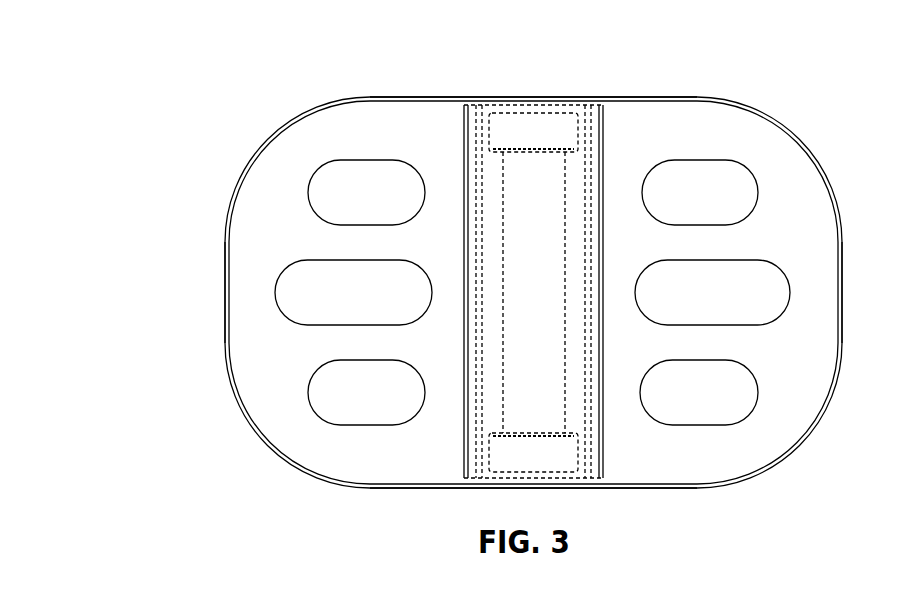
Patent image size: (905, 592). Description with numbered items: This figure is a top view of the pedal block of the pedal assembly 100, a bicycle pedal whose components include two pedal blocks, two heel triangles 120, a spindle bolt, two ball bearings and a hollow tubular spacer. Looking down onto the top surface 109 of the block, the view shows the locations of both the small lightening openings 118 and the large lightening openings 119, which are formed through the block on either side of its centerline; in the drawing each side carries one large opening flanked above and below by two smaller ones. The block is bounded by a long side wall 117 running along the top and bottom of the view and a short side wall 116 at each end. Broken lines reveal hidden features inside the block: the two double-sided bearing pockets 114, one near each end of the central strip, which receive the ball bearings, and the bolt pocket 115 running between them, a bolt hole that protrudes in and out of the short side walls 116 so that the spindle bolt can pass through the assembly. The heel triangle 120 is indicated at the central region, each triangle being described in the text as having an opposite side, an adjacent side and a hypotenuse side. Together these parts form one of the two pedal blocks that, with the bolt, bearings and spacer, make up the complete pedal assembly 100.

The pedal assembly 100 is at (200, 314).
The top surface 109 is at (620, 160).
The bearing pocket 114 is at (553, 135).
The bolt pocket 115 is at (502, 308).
The short side wall 116 is at (226, 226).
The long side wall 117 is at (440, 97).
The small lightening openings 118 is at (325, 197).
The large lightening openings 119 is at (313, 310).
The heel triangle 120 is at (456, 268).